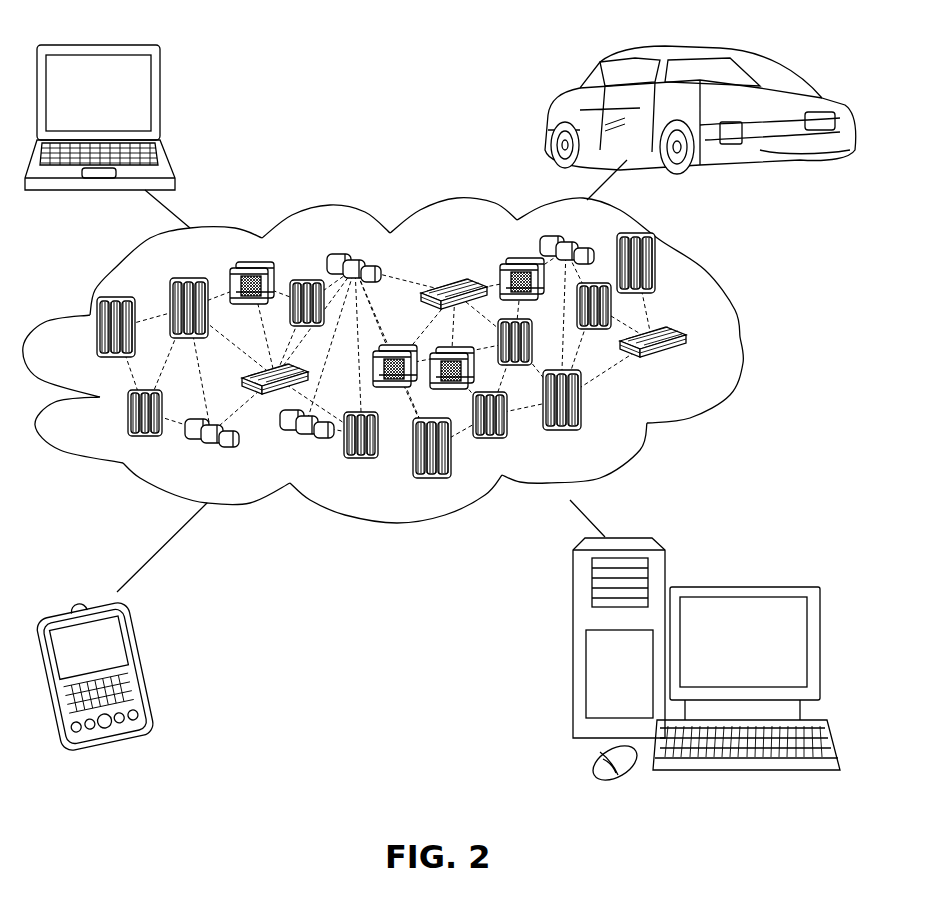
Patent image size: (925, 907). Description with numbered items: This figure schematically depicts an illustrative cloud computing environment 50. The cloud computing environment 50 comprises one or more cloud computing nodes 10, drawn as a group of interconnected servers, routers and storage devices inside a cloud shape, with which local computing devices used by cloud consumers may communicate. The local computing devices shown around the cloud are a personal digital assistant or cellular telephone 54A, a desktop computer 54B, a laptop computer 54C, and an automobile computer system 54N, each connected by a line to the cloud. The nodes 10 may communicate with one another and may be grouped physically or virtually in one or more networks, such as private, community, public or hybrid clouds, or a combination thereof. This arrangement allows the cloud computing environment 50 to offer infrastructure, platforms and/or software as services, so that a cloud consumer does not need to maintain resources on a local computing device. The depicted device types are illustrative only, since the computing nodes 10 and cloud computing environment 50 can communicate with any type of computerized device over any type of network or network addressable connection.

The cloud computing environment 50 is at (740, 337).
The cloud computing nodes 10 is at (690, 363).
The personal digital assistant or cellular telephone 54A is at (152, 670).
The desktop computer 54B is at (740, 587).
The laptop computer 54C is at (160, 100).
The automobile computer system 54N is at (548, 112).